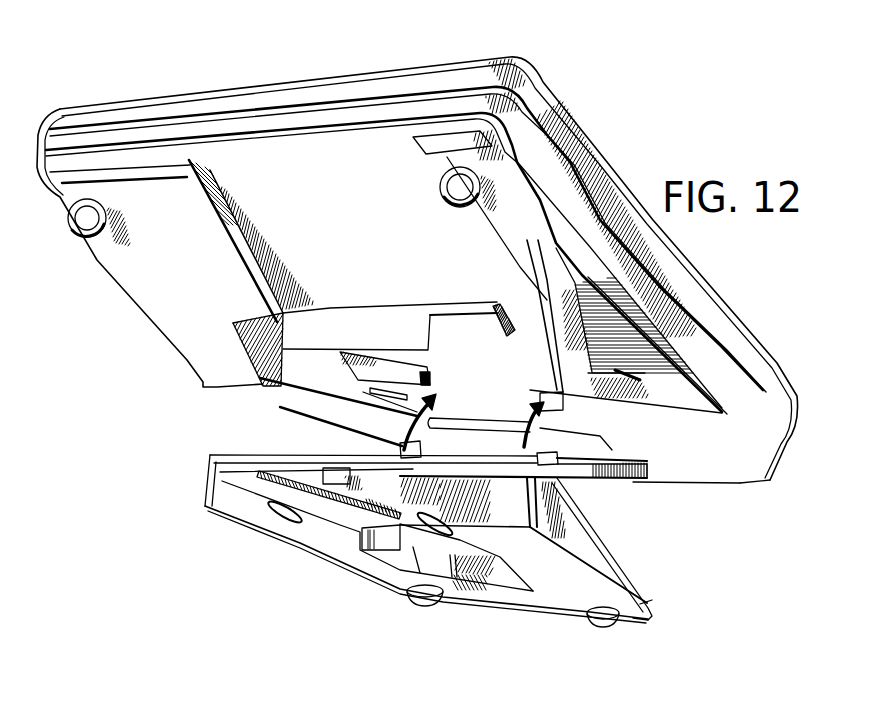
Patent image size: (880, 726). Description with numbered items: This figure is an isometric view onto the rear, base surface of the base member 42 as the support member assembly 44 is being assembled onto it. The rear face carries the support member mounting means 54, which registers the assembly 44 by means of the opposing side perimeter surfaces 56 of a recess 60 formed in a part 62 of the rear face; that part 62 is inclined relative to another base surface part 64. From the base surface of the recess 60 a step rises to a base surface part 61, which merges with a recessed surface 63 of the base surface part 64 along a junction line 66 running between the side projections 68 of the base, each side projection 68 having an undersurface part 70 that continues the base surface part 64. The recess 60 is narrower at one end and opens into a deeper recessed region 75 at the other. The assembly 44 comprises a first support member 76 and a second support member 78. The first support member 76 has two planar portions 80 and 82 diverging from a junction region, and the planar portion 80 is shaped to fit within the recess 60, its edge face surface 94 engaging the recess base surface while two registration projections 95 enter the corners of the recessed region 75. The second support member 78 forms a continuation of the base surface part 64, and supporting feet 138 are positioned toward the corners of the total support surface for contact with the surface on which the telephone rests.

The base member 42 is at (143, 95).
The support member assembly 44 is at (262, 543).
The support member mounting means 54 is at (333, 386).
The side perimeter surfaces 56 is at (313, 396).
The recess 60 is at (703, 472).
The base surface part 61 is at (385, 318).
The part of the rear face 62 is at (705, 481).
The recessed surface 63 is at (253, 153).
The base surface part 64 is at (153, 265).
The junction line 66 is at (377, 320).
The side projections 68 is at (213, 357).
The undersurface part 70 is at (207, 360).
The recessed region 75 is at (477, 407).
The first support member 76 is at (658, 588).
The second support member 78 is at (488, 605).
The planar portion 80 is at (563, 473).
The planar portion 82 is at (647, 616).
The edge face surface 94 is at (578, 431).
The registration projections 95 is at (393, 417).
The supporting feet 138 is at (410, 605).